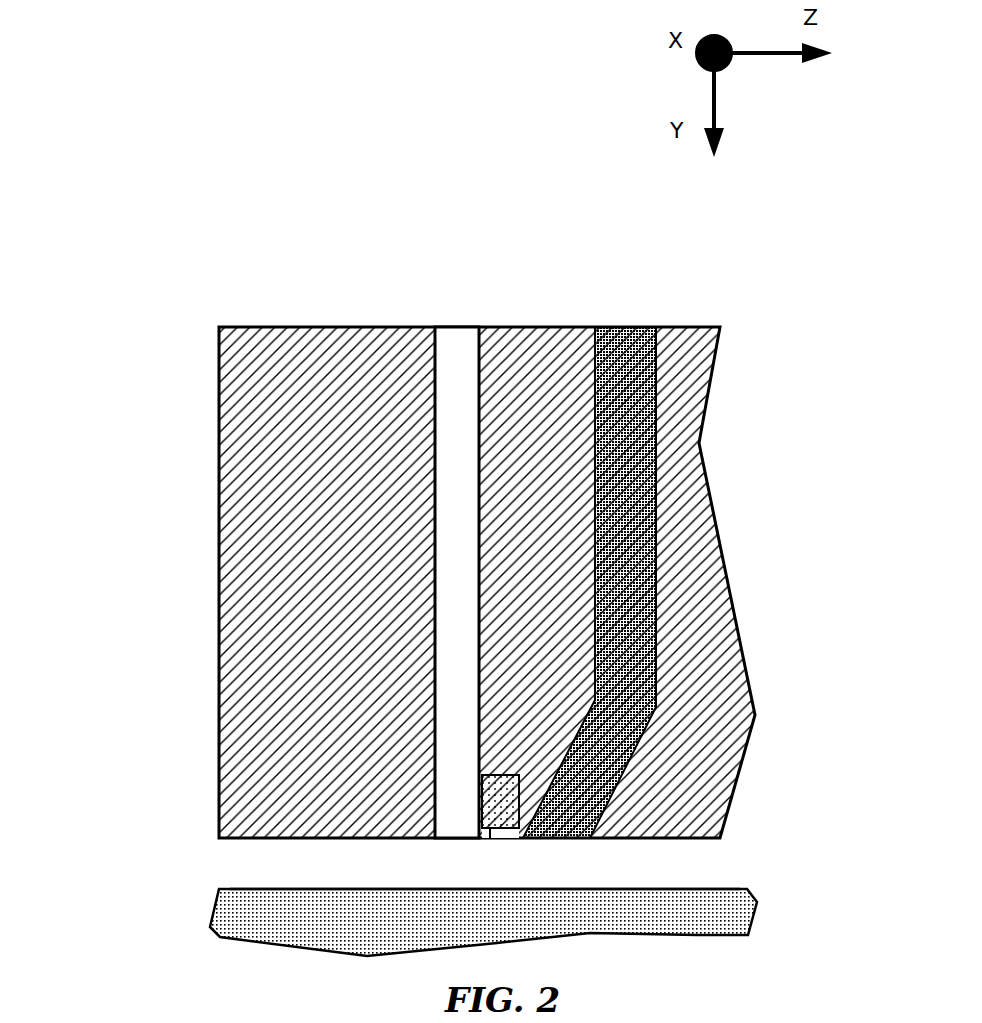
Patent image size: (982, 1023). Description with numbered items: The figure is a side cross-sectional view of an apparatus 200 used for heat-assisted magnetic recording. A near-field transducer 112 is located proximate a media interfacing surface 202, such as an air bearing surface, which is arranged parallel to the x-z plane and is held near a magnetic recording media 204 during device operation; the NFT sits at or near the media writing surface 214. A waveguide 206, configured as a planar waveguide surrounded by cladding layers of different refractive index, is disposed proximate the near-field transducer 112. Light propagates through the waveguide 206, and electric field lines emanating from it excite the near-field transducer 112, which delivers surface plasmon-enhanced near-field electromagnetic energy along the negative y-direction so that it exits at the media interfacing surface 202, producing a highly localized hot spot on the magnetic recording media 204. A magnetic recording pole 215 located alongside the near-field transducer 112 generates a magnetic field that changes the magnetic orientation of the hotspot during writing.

The apparatus 200 is at (156, 277).
The media interfacing surface 202 is at (248, 840).
The magnetic recording media 204 is at (740, 900).
The waveguide 206 is at (457, 582).
The near-field transducer 112 is at (505, 807).
The media writing surface 214 is at (693, 888).
The magnetic recording pole 215 is at (637, 507).